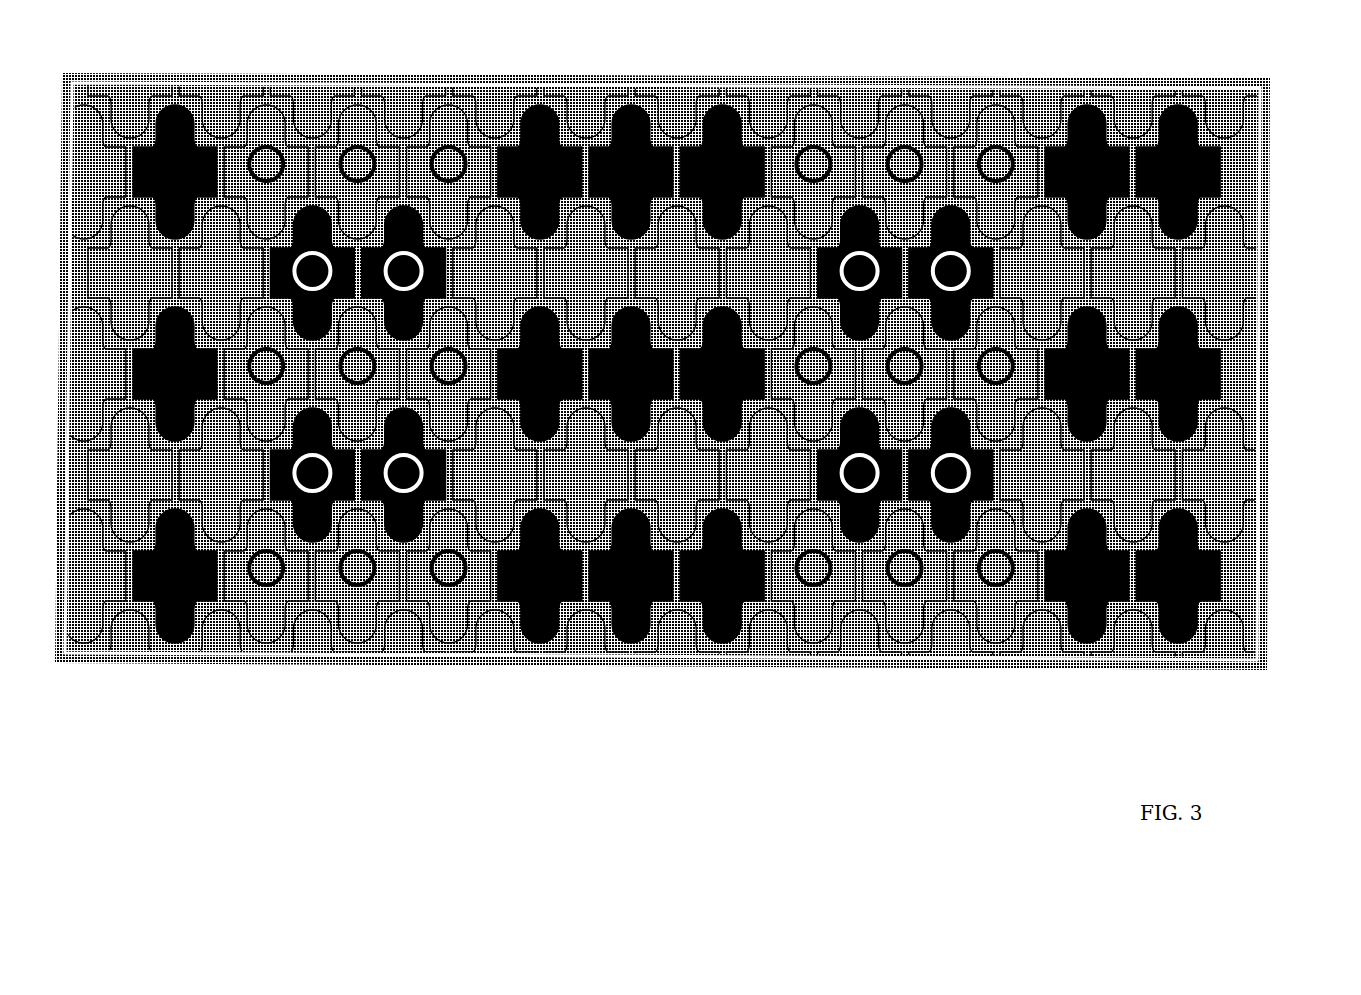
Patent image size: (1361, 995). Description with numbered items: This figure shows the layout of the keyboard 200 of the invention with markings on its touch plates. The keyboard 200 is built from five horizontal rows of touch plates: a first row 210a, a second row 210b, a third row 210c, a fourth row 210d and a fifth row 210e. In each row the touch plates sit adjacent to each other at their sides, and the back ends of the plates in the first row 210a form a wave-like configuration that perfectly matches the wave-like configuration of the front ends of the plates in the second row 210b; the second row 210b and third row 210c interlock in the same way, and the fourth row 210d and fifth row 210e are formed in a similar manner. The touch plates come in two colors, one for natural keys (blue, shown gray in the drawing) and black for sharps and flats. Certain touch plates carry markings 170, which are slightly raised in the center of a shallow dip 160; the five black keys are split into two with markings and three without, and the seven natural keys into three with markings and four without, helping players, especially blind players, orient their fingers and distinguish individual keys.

The keyboard 200 is at (692, 374).
The first row 210a is at (689, 625).
The second row 210b is at (712, 475).
The third row 210c is at (688, 374).
The fourth row 210d is at (715, 273).
The fifth row 210e is at (689, 172).
The shallow dip 160 is at (333, 582).
The markings 170 is at (262, 586).